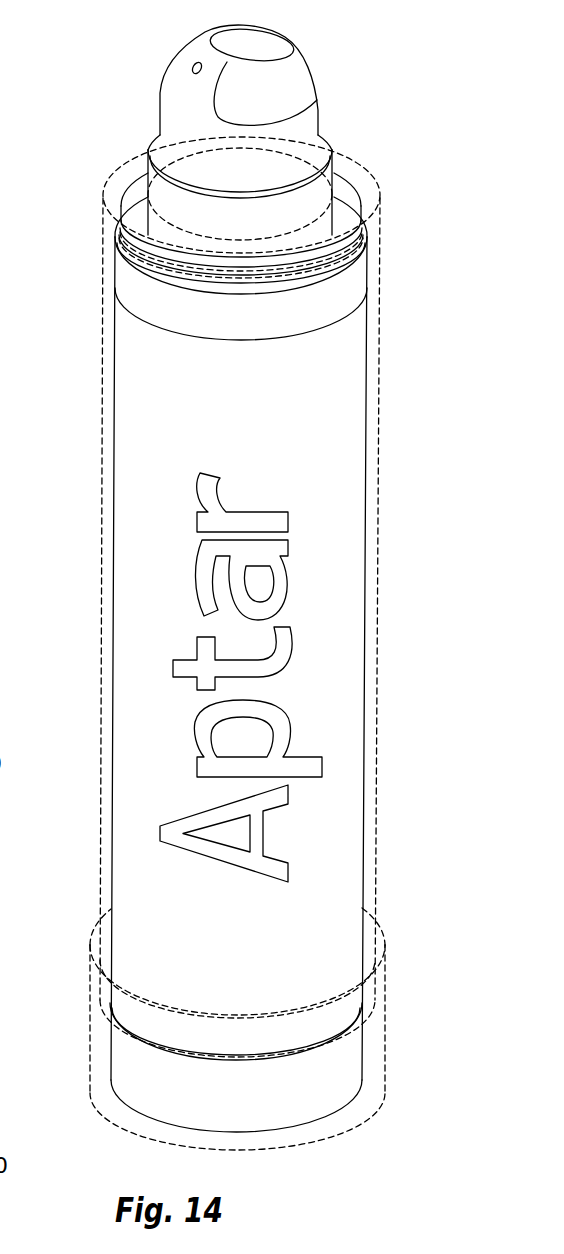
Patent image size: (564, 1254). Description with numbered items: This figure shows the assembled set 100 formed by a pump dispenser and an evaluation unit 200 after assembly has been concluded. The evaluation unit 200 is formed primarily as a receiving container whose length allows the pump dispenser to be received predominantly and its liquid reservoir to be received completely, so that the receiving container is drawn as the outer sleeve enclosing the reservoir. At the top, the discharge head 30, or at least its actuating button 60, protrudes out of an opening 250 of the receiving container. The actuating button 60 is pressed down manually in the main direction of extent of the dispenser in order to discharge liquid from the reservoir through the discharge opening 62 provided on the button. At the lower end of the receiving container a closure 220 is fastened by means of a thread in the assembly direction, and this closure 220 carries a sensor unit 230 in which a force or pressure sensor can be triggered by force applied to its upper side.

The dispenser 100 is at (183, 664).
The actuating button 60 is at (300, 97).
The discharge opening 62 is at (195, 72).
The discharge head 30 is at (140, 167).
The opening 250 is at (317, 218).
The evaluation unit 200 is at (373, 541).
The sensor unit 230 is at (124, 1060).
The closure 220 is at (392, 1054).